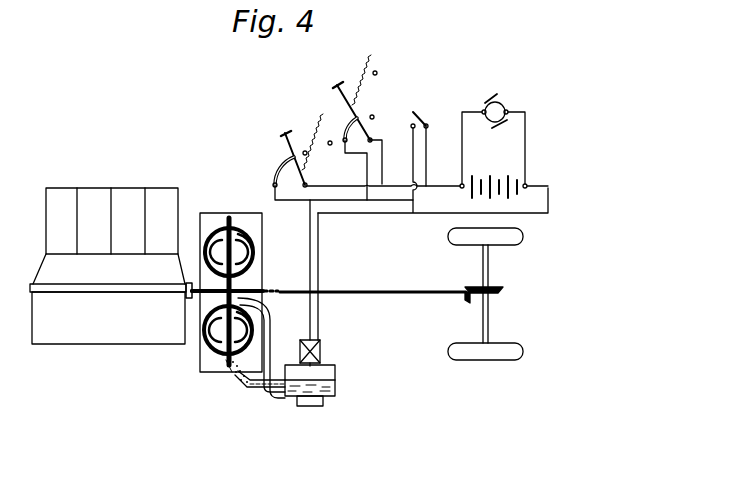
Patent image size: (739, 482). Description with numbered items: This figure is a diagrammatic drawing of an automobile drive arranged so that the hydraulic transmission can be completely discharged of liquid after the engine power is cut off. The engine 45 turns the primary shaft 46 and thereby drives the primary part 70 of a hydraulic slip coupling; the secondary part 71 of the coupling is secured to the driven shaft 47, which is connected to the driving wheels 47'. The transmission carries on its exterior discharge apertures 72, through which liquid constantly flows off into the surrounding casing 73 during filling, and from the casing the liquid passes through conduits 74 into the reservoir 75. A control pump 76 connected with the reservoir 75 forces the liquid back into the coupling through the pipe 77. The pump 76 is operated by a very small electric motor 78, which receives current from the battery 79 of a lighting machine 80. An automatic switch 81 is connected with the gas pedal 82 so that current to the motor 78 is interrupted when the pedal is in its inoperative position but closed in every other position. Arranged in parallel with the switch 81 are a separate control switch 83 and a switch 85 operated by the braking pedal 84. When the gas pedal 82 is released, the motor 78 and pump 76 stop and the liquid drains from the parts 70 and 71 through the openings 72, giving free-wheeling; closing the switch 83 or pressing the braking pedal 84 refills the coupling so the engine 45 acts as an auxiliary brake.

The engine 45 is at (108, 266).
The primary shaft 46 is at (192, 282).
The driven shaft 47 is at (365, 282).
The driving wheels 47' is at (489, 294).
The primary part 70 is at (210, 351).
The secondary part 71 is at (235, 376).
The discharge apertures 72 is at (232, 360).
The casing 73 is at (200, 350).
The conduits 74 is at (280, 381).
The reservoir 75 is at (337, 378).
The control pump 76 is at (308, 398).
The pipe 77 is at (271, 318).
The electric motor 78 is at (320, 351).
The battery 79 is at (486, 178).
The lighting machine 80 is at (497, 106).
The automatic switch 81 is at (278, 173).
The gas pedal 82 is at (283, 136).
The control switch 83 is at (423, 142).
The braking pedal 84 is at (340, 86).
The switch 85 is at (347, 131).